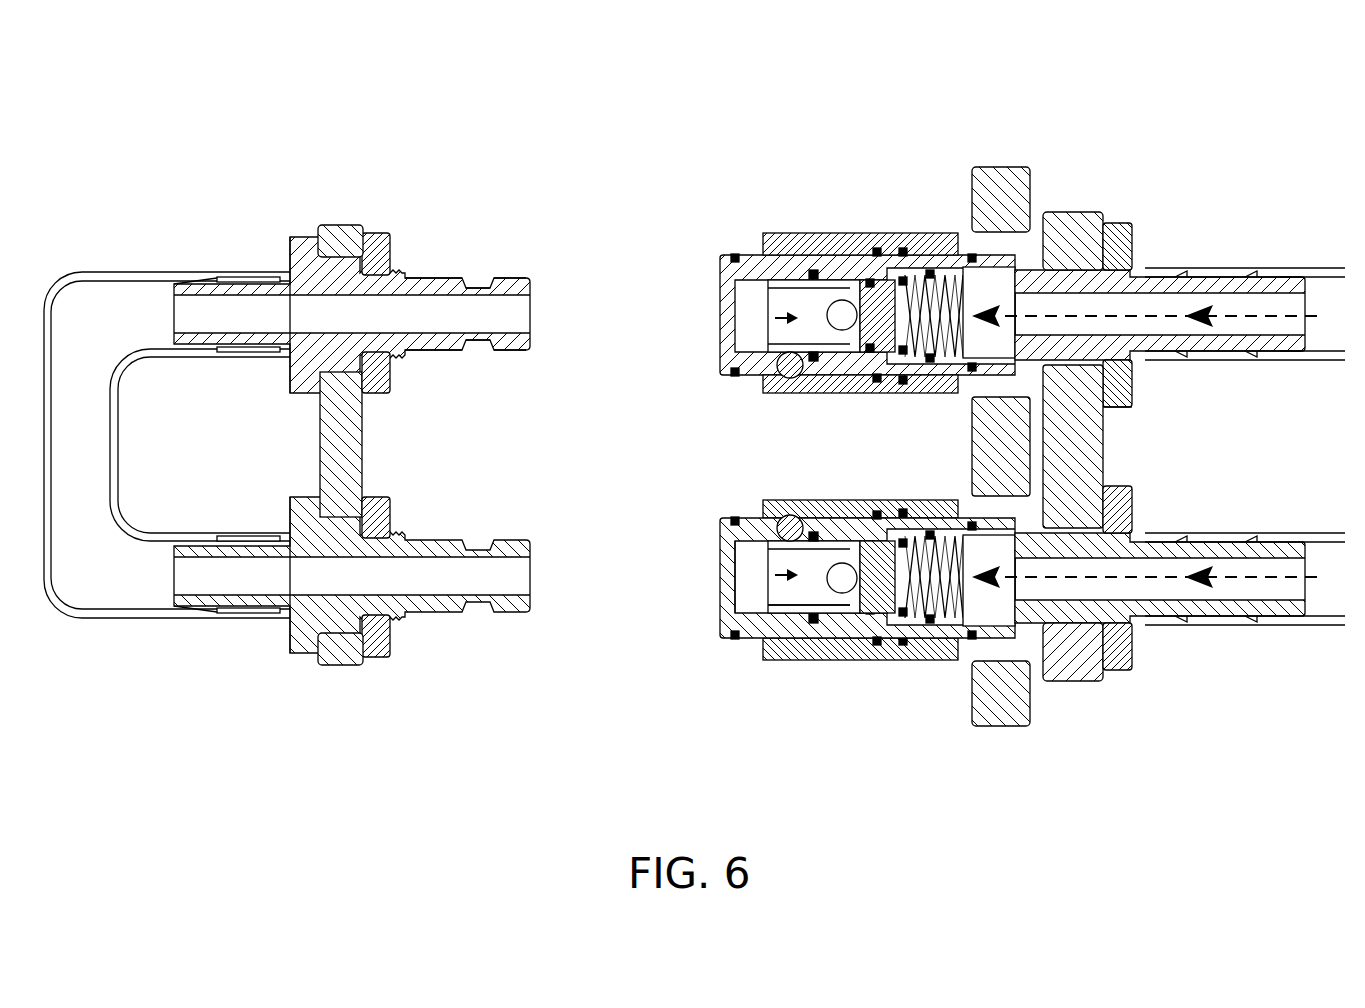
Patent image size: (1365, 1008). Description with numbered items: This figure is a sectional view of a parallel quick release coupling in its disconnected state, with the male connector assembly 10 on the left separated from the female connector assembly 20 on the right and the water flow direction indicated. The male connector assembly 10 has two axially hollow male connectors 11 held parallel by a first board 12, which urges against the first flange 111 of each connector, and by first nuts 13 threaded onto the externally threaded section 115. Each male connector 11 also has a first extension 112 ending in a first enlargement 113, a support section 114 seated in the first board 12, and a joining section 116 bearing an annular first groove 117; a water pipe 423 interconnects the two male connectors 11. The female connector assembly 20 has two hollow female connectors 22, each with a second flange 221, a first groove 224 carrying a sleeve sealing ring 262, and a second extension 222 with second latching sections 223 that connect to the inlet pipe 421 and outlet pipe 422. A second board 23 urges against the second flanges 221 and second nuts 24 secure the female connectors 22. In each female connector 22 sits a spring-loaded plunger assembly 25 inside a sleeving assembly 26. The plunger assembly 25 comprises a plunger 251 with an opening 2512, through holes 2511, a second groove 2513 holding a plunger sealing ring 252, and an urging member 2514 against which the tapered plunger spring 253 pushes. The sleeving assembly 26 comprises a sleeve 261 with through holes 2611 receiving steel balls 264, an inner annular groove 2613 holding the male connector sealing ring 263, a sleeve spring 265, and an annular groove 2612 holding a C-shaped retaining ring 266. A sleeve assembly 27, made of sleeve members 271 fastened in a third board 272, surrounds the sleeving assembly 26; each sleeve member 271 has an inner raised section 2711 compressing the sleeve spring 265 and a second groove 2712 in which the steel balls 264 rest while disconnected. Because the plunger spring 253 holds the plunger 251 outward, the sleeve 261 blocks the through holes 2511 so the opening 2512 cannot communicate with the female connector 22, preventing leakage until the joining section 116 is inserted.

The male connector assembly 10 is at (290, 100).
The male connector 11 is at (532, 152).
The first flange 111 is at (300, 258).
The first extension 112 is at (245, 272).
The first enlargement 113 is at (195, 270).
The support section 114 is at (335, 230).
The externally threaded section 115 is at (430, 272).
The joining section 116 is at (482, 284).
The first groove 117 is at (525, 278).
The first board 12 is at (345, 440).
The first nut 13 is at (390, 372).
The water pipe 423 is at (120, 578).
The female connector assembly 20 is at (1016, 135).
The female connector 22 is at (1330, 150).
The second flange 221 is at (1018, 266).
The second extension 222 is at (1290, 277).
The second latching section 223 is at (1200, 275).
The first groove 224 is at (1060, 262).
The second board 23 is at (1080, 440).
The second nut 24 is at (1122, 388).
The plunger assembly 25 is at (947, 138).
The plunger 251 is at (785, 250).
The through holes 2511 is at (835, 255).
The opening 2512 is at (720, 262).
The second groove 2513 is at (852, 255).
The urging member 2514 is at (880, 250).
The plunger sealing ring 252 is at (868, 250).
The plunger spring 253 is at (930, 250).
The sleeving assembly 26 is at (955, 760).
The sleeve 261 is at (860, 640).
The through holes 2611 is at (755, 640).
The annular groove 2612 is at (735, 640).
The annular groove 2613 is at (752, 536).
The sleeve sealing ring 262 is at (958, 660).
The male connector sealing ring 263 is at (822, 640).
The steel balls 264 is at (795, 640).
The sleeve spring 265 is at (900, 660).
The C-shaped retaining ring 266 is at (745, 640).
The sleeve assembly 27 is at (757, 398).
The sleeve member 271 is at (937, 492).
The raised section 2711 is at (853, 513).
The second groove 2712 is at (838, 520).
The third board 272 is at (972, 417).
The inlet pipe 421 is at (1272, 362).
The outlet pipe 422 is at (1237, 622).